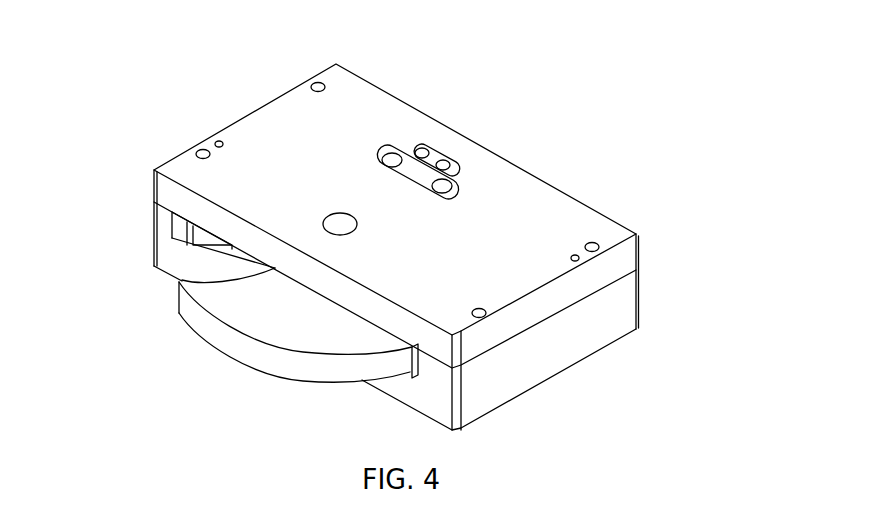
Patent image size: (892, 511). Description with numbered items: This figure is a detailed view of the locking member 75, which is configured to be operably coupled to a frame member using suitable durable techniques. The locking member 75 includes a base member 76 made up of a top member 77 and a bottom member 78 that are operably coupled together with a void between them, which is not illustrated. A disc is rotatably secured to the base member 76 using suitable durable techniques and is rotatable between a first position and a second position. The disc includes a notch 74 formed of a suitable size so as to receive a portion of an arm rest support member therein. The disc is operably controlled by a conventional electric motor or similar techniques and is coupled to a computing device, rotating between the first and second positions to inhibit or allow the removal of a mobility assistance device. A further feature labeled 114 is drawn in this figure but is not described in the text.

The locking member 75 is at (472, 108).
The top member 77 is at (522, 225).
The bottom member 78 is at (608, 308).
The base member 76 is at (136, 208).
The notch 74 is at (170, 273).
The front strap slot 114 is at (388, 388).